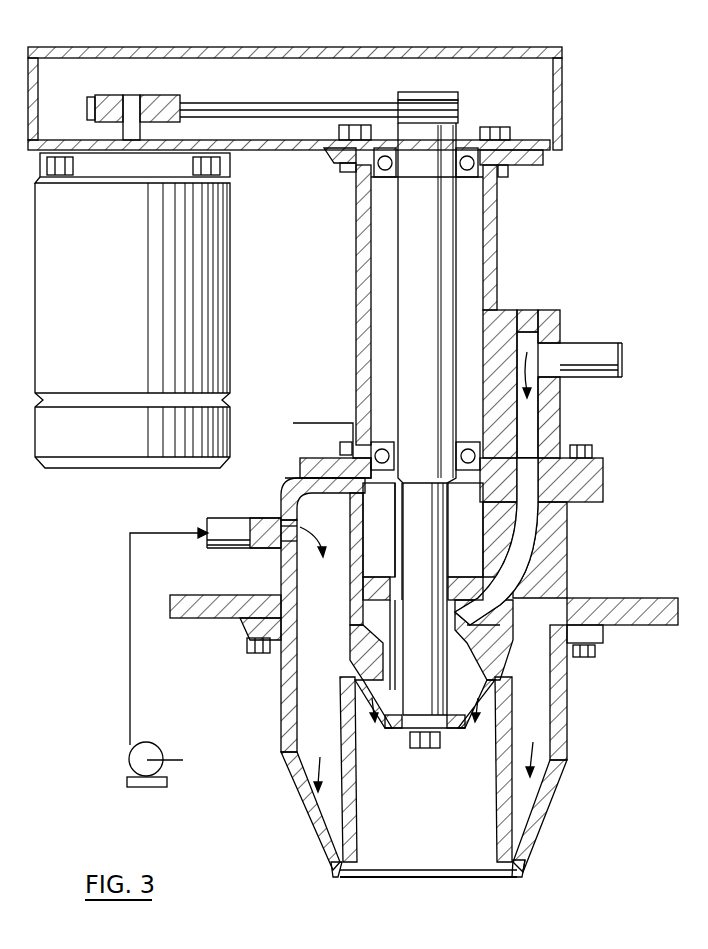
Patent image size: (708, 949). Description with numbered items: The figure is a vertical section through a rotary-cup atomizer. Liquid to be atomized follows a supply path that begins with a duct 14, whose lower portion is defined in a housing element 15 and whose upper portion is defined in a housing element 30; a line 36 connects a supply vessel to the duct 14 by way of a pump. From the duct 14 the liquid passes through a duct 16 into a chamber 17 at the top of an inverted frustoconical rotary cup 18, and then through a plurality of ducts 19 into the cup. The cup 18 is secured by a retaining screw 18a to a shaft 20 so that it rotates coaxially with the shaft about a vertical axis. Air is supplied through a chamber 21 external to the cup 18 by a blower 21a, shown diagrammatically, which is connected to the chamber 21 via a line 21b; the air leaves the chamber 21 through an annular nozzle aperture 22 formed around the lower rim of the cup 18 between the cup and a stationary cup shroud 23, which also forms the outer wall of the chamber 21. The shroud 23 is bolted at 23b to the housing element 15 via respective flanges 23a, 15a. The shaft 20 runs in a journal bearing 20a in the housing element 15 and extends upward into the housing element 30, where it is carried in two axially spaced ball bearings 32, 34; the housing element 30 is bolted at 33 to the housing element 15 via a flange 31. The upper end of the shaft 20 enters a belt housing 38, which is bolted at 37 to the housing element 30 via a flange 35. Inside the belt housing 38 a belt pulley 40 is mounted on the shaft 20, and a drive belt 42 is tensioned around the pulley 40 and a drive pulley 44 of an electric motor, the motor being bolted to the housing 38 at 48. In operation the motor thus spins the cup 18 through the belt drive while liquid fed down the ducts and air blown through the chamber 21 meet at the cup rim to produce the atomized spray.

The duct 14 is at (534, 478).
The housing element 15 is at (397, 665).
The flange 15a is at (622, 590).
The duct 16 is at (122, 283).
The chamber 17 is at (507, 652).
The rotary cup 18 is at (465, 777).
The retaining screw 18a is at (427, 768).
The ducts 19 is at (428, 688).
The shaft 20 is at (441, 599).
The journal bearing 20a is at (388, 530).
The chamber 21 is at (332, 592).
The blower 21a is at (175, 745).
The line 21b is at (213, 614).
The annular nozzle aperture 22 is at (417, 881).
The cup shroud 23 is at (552, 845).
The flange 23a is at (618, 642).
The bolt 23b is at (432, 666).
The housing element 30 is at (458, 311).
The flange 31 is at (466, 462).
The ball bearing 32 is at (383, 303).
The bolt 33 is at (607, 431).
The ball bearing 34 is at (425, 309).
The flange 35 is at (462, 164).
The line 36 is at (580, 337).
The bolt 37 is at (527, 201).
The belt housing 38 is at (318, 98).
The belt pulley 40 is at (455, 76).
The drive belt 42 is at (319, 91).
The drive pulley 44 is at (136, 84).
The bolt 48 is at (162, 182).